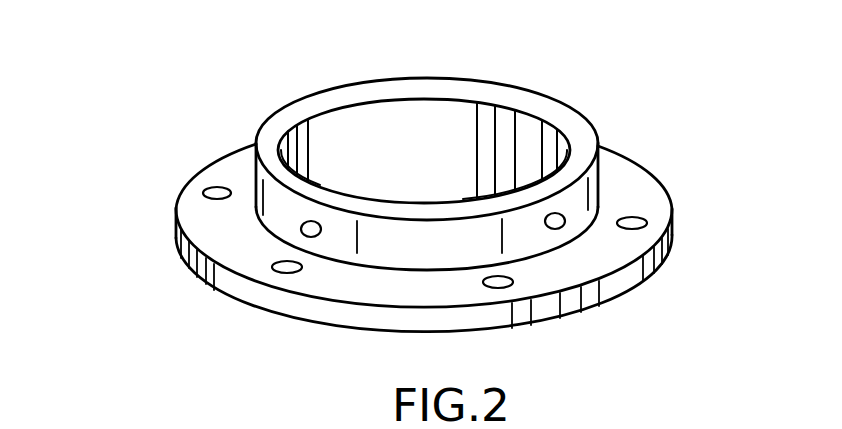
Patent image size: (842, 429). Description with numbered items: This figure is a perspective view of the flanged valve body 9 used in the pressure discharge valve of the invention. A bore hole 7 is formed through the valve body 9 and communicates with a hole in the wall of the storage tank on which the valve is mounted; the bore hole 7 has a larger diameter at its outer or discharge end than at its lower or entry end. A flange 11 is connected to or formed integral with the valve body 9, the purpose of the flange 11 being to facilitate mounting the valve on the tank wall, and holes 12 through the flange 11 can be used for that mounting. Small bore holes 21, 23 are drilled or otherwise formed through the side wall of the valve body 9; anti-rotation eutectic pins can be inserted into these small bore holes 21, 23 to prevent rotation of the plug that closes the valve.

The bore hole 7 is at (440, 133).
The valve body 9 is at (577, 197).
The flange 11 is at (352, 284).
The holes 12 is at (505, 287).
The small bore hole 21 is at (302, 223).
The small bore hole 23 is at (564, 220).